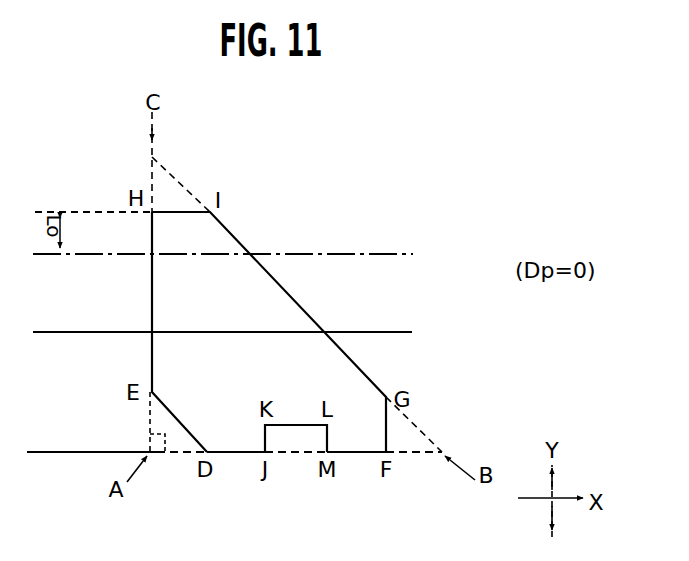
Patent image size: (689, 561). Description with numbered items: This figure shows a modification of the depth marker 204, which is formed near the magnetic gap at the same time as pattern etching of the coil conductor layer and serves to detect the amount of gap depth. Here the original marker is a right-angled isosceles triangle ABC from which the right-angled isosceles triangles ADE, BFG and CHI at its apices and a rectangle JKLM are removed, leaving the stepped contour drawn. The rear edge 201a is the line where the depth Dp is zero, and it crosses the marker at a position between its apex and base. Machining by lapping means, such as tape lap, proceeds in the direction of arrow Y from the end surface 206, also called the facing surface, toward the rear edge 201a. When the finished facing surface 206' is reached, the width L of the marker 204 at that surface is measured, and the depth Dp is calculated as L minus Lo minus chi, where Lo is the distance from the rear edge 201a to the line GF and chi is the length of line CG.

The depth marker 204 is at (246, 239).
The rear edge 201a is at (400, 256).
The finished facing surface 206' is at (222, 354).
The end surface (facing surface) 206 is at (234, 469).